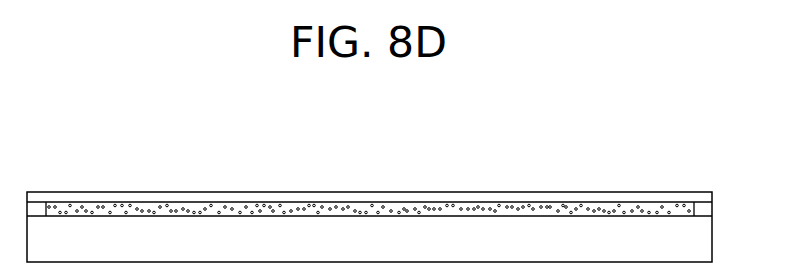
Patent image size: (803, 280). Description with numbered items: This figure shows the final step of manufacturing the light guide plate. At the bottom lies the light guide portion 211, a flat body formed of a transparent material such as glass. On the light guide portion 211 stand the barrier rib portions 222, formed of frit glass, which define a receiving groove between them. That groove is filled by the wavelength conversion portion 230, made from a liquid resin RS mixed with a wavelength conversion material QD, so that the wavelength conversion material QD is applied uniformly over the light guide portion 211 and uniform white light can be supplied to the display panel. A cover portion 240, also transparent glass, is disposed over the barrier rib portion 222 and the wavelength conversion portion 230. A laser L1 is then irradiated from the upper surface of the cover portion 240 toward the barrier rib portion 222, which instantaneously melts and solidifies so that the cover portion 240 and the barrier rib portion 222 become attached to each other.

The laser L1 is at (35, 172).
The light guide portion 211 is at (700, 249).
The barrier rib portion 222 is at (700, 209).
The wavelength conversion portion 230 is at (370, 165).
The liquid resin RS is at (255, 212).
The wavelength conversion material QD is at (243, 148).
The cover portion 240 is at (441, 200).